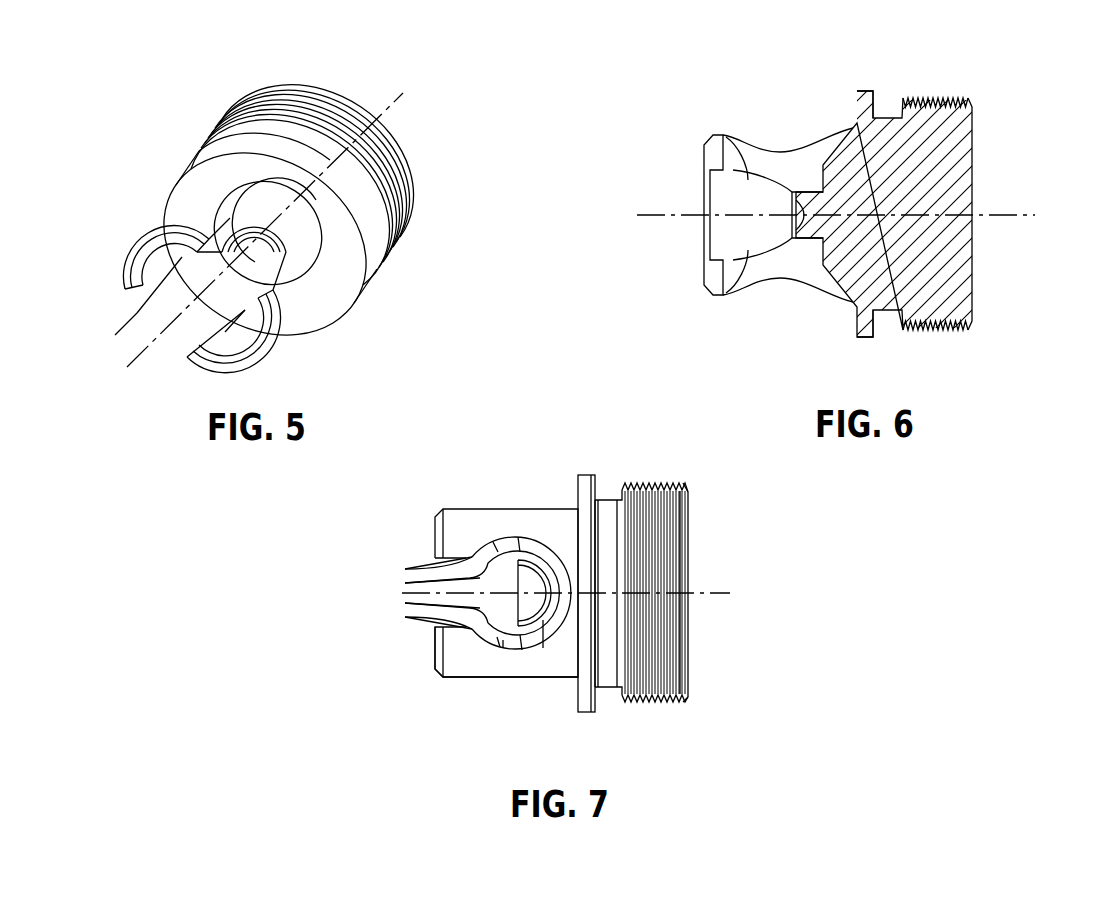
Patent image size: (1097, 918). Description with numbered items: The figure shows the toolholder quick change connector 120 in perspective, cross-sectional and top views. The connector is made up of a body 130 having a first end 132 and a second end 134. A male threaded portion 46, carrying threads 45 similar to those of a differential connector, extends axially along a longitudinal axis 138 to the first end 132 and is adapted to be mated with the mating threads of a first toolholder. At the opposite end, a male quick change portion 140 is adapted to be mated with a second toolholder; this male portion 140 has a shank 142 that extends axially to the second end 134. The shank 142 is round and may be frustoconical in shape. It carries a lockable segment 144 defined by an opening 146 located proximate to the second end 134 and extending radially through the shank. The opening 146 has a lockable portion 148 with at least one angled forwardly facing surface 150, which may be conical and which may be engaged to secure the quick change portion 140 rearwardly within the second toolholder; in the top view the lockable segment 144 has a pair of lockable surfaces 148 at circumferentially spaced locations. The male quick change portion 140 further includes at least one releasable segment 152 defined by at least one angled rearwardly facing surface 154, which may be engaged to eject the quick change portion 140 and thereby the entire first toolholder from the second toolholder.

In FIG. 5, the quick change connector 120 is at (109, 108).
In FIG. 6, the quick change connector 120 is at (901, 48).
In FIG. 7, the quick change connector 120 is at (587, 433).
In FIG. 5, the body 130 is at (176, 200).
In FIG. 6, the body 130 is at (857, 93).
In FIG. 7, the body 130 is at (590, 478).
In FIG. 5, the threads 45 is at (290, 102).
In FIG. 6, the threads 45 is at (940, 100).
In FIG. 7, the threads 45 is at (658, 481).
In FIG. 7, the male threaded portion 46 is at (665, 675).
In FIG. 7, the first end 132 is at (690, 668).
In FIG. 7, the second end 134 is at (433, 652).
In FIG. 5, the longitudinal axis 138 is at (405, 100).
In FIG. 6, the longitudinal axis 138 is at (983, 214).
In FIG. 7, the longitudinal axis 138 is at (716, 593).
In FIG. 5, the male quick change portion 140 is at (200, 192).
In FIG. 6, the male quick change portion 140 is at (830, 212).
In FIG. 7, the male quick change portion 140 is at (488, 507).
In FIG. 5, the shank 142 is at (172, 215).
In FIG. 7, the shank 142 is at (468, 513).
In FIG. 6, the lockable segment 144 is at (747, 183).
In FIG. 7, the lockable segment 144 is at (463, 560).
In FIG. 5, the opening 146 is at (160, 315).
In FIG. 7, the opening 146 is at (470, 607).
In FIG. 6, the lockable portion 148 is at (747, 150).
In FIG. 7, the lockable portion 148 is at (483, 575).
In FIG. 5, the angled forwardly facing surface 150 is at (204, 299).
In FIG. 7, the angled forwardly facing surface 150 is at (490, 542).
In FIG. 6, the releasable segment 152 is at (793, 232).
In FIG. 7, the releasable segment 152 is at (543, 620).
In FIG. 6, the angled rearwardly facing surface 154 is at (797, 224).
In FIG. 7, the angled rearwardly facing surface 154 is at (503, 640).